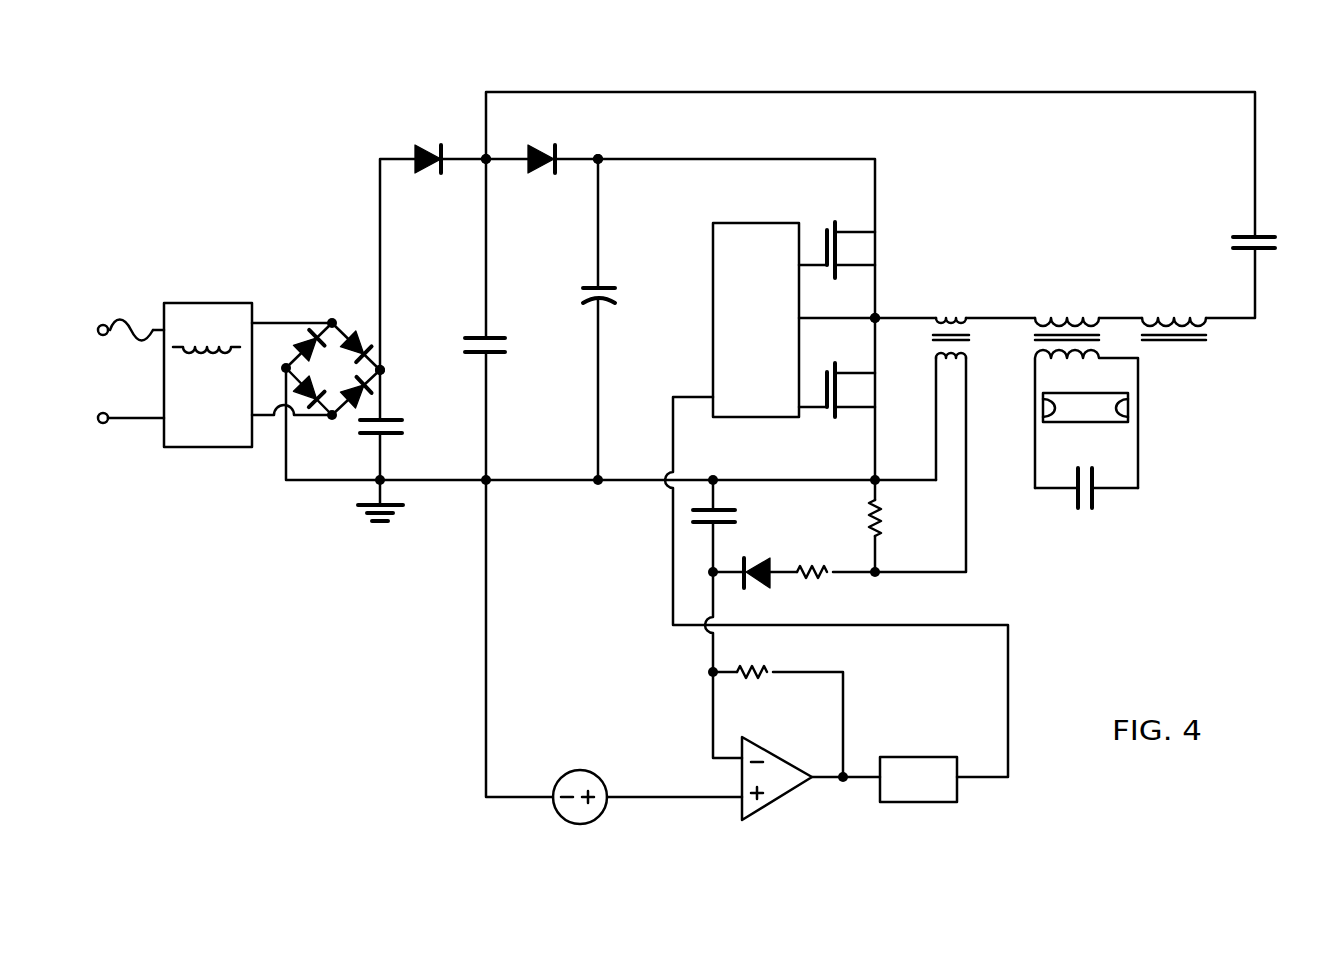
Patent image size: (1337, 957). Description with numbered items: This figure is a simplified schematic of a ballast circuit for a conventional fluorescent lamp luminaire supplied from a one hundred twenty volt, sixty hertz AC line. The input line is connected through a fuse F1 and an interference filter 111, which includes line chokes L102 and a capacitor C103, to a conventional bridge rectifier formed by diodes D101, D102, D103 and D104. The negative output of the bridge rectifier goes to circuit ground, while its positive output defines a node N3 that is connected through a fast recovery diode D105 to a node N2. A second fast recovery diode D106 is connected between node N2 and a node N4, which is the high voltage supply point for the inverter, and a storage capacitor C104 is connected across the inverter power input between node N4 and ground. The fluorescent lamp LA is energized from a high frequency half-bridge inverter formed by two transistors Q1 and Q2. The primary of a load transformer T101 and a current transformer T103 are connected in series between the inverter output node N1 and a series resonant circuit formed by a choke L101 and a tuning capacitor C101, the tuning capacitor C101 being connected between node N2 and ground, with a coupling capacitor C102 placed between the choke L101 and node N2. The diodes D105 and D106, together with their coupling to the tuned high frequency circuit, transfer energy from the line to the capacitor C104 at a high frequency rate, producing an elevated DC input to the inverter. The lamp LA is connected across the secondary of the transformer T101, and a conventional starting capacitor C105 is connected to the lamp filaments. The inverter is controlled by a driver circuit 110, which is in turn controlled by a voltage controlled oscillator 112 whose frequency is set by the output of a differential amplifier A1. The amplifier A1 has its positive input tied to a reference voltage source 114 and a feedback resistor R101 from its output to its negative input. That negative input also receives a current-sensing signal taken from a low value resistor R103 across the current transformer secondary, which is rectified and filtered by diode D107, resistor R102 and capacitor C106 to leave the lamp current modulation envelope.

The fuse F1 is at (131, 314).
The interference filter 111 is at (173, 302).
The line chokes L102 is at (206, 366).
The bridge rectifier diode D101 is at (343, 333).
The bridge rectifier diode D102 is at (383, 383).
The bridge rectifier diode D103 is at (312, 410).
The bridge rectifier diode D104 is at (301, 337).
The node N3 is at (384, 369).
The capacitor C103 is at (408, 429).
The tuning capacitor C101 is at (512, 346).
The fast recovery diode D105 is at (427, 142).
The second fast recovery diode D106 is at (537, 142).
The node N2 is at (488, 163).
The node N4 is at (603, 157).
The storage capacitor C104 is at (626, 301).
The driver circuit 110 is at (722, 223).
The transistor Q1 is at (849, 250).
The transistor Q2 is at (837, 402).
The output node N1 is at (878, 322).
The current transformer T103 is at (952, 322).
The load transformer T101 is at (1086, 387).
The choke L101 is at (1200, 338).
The coupling capacitor C102 is at (1281, 243).
The fluorescent lamp LA is at (1085, 426).
The starting capacitor C105 is at (1086, 505).
The capacitor C106 is at (741, 518).
The low value resistor R103 is at (902, 519).
The resistor R102 is at (818, 556).
The diode D107 is at (754, 592).
The feedback resistor R101 is at (756, 690).
The reference voltage source 114 is at (580, 770).
The differential amplifier A1 is at (763, 811).
The voltage controlled oscillator 112 is at (910, 757).